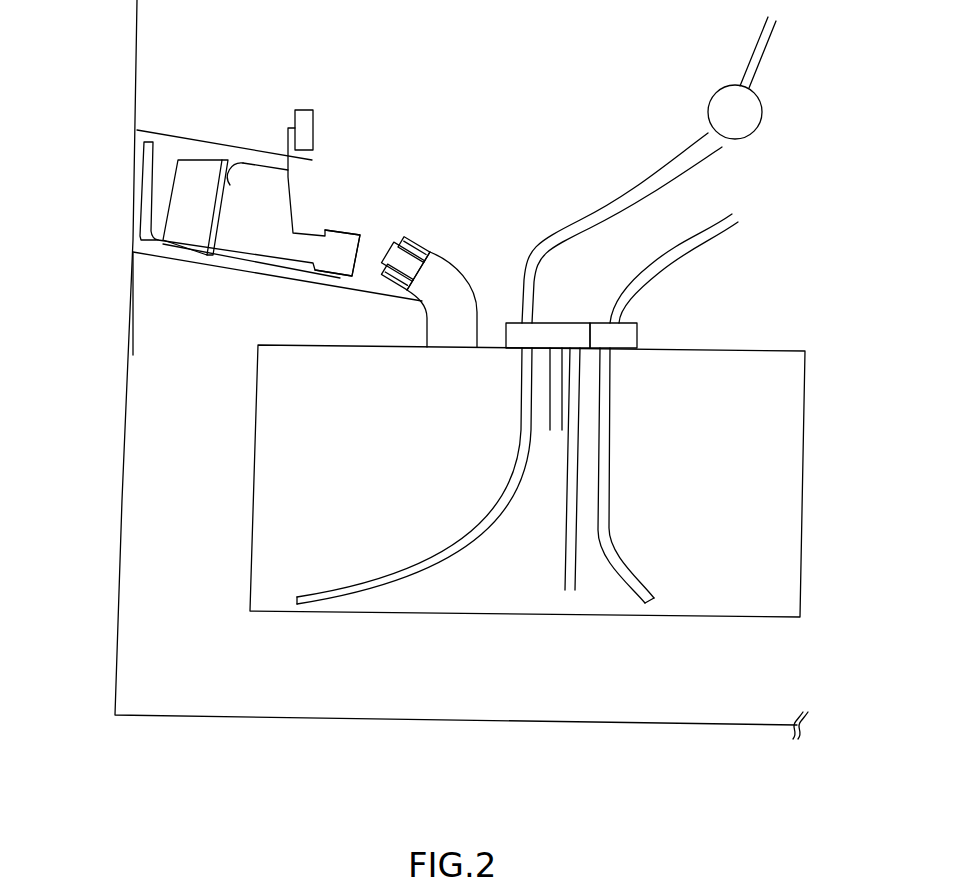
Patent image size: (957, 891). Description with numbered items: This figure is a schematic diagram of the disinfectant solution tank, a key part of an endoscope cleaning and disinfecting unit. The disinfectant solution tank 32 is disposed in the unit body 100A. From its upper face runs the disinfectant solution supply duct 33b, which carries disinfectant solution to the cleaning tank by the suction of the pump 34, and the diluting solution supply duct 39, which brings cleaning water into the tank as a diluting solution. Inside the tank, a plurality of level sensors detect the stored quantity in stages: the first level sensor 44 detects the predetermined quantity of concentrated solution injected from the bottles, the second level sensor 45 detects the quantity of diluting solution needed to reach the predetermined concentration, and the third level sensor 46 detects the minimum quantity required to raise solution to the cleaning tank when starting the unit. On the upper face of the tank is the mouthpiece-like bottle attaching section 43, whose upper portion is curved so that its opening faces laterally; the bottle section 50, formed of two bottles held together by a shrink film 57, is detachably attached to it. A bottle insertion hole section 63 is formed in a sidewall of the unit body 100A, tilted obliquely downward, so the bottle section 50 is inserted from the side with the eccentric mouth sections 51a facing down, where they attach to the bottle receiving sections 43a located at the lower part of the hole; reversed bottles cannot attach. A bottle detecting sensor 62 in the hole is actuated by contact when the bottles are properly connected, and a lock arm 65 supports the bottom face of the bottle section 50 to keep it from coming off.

The body of the cleaning and disinfecting unit 100A is at (121, 472).
The bottle insertion hole section 63 is at (178, 140).
The shrink film 57 is at (243, 172).
The lock arm 65 is at (142, 162).
The bottle detecting sensor 62 is at (315, 122).
The bottle section 50 is at (313, 204).
The mouth section 51a is at (338, 247).
The bottle attaching section 43 is at (464, 268).
The bottle receiving section 43a is at (418, 252).
The disinfectant solution tank 32 is at (808, 524).
The disinfectant solution supply duct 33b is at (633, 183).
The pump 34 is at (762, 113).
The diluting solution supply duct 39 is at (675, 257).
The second level sensor 45 is at (550, 382).
The third level sensor 46 is at (562, 390).
The first level sensor 44 is at (568, 515).